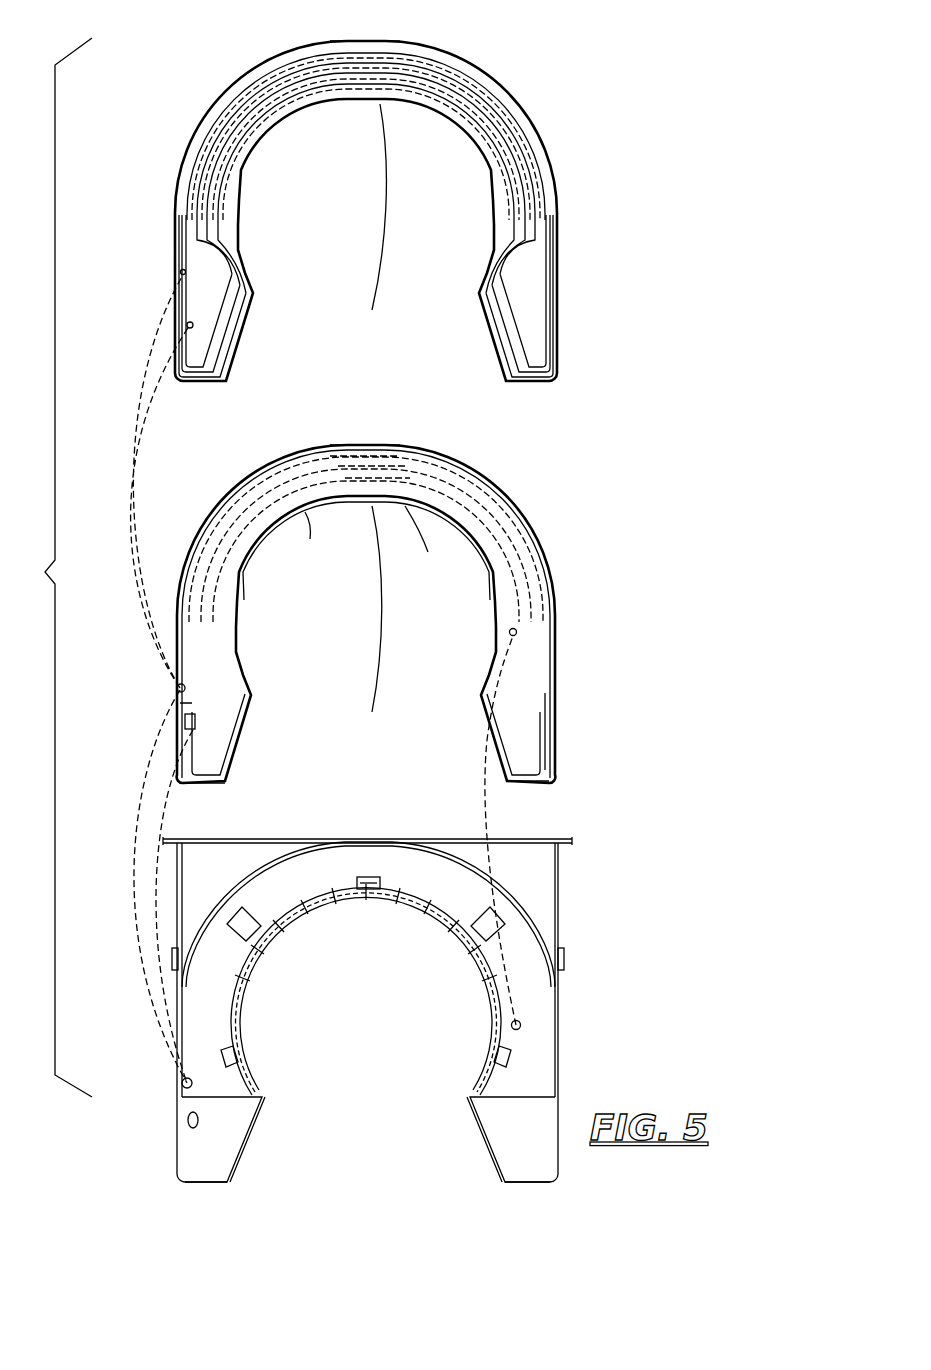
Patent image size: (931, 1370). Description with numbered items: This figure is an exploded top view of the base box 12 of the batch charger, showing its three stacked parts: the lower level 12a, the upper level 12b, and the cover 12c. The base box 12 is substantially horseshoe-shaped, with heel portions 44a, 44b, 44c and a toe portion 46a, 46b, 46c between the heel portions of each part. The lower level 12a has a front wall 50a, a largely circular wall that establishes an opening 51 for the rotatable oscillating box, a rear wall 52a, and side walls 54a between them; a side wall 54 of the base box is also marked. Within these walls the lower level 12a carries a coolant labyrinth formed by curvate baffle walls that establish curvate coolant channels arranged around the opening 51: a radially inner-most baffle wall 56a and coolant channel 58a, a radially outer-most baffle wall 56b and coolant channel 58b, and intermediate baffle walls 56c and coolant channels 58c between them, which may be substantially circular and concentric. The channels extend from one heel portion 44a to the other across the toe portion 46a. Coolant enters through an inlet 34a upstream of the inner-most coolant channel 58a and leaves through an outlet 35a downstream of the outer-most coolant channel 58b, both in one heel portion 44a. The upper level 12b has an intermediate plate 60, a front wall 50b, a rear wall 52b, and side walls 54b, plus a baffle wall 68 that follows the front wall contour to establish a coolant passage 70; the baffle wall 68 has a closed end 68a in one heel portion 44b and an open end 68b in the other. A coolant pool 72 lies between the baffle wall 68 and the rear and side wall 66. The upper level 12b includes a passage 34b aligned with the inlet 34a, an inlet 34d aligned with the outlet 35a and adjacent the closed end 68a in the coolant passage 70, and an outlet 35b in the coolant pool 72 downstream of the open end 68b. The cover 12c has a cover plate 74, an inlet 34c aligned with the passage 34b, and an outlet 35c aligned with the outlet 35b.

The base box 12 is at (50, 567).
The lower level 12a is at (373, 226).
The upper level 12b is at (365, 620).
The cover 12c is at (367, 1015).
The inlet 34a is at (178, 270).
The passage 34b is at (176, 688).
The inlet 34c is at (180, 1086).
The inlet 34d is at (188, 727).
The outlet 35a is at (186, 324).
The outlet 35b is at (522, 632).
The outlet 35c is at (524, 1028).
The heel portion 44a is at (198, 392).
The heel portion 44b is at (208, 790).
The heel portion 44c is at (195, 1186).
The toe portion 46a is at (385, 36).
The toe portion 46b is at (370, 430).
The toe portion 46c is at (370, 826).
The front wall 50a is at (510, 384).
The front wall 50b is at (510, 786).
The opening 51 is at (320, 244).
The rear wall 52a is at (420, 43).
The rear wall 52b is at (428, 446).
The side wall 54 is at (176, 216).
The side wall 54a is at (558, 243).
The side wall 54b is at (556, 672).
The radially inner-most baffle wall 56a is at (336, 56).
The radially outer-most baffle wall 56b is at (292, 64).
The intermediate baffle wall 56c is at (490, 128).
The radially inner-most coolant channel 58a is at (302, 112).
The radially outer-most coolant channel 58b is at (258, 84).
The intermediate coolant channel 58c is at (527, 206).
The intermediate plate 60 is at (366, 539).
The side wall 66 is at (177, 614).
The baffle wall 68 is at (422, 540).
The closed end 68a is at (180, 703).
The open end 68b is at (547, 770).
The coolant passage 70 is at (310, 538).
The coolant pool 72 is at (310, 475).
The cover plate 74 is at (366, 980).